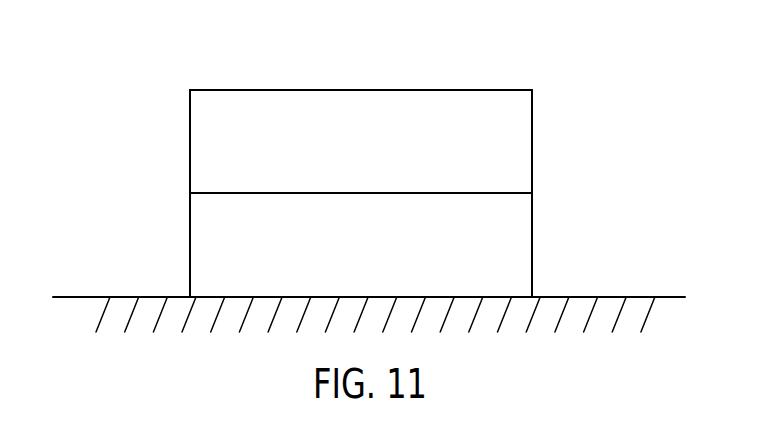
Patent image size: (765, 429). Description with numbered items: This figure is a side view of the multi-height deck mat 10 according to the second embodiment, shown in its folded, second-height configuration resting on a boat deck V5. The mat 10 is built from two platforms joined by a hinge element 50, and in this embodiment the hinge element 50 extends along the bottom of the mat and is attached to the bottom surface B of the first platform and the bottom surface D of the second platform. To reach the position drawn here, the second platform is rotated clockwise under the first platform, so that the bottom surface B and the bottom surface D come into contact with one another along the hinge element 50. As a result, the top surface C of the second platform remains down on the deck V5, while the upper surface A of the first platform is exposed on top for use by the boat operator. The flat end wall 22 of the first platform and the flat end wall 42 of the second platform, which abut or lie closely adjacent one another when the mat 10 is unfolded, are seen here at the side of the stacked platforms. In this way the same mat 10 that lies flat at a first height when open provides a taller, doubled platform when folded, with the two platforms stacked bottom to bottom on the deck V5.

The multi-height deck mat 10 is at (302, 154).
The flat end wall 22 is at (532, 135).
The hinge element 50 is at (532, 191).
The flat end wall 42 is at (532, 252).
The boat deck V5 is at (72, 296).
The upper surface A is at (273, 90).
The bottom surface B is at (380, 193).
The top surface C is at (292, 298).
The bottom surface D is at (462, 193).